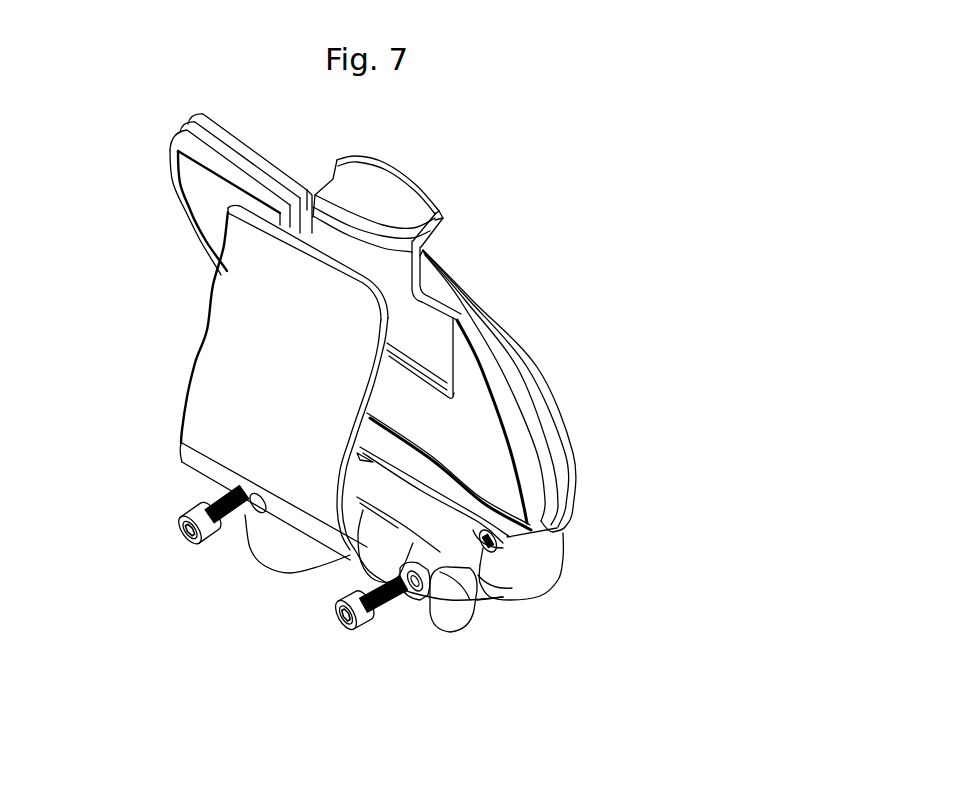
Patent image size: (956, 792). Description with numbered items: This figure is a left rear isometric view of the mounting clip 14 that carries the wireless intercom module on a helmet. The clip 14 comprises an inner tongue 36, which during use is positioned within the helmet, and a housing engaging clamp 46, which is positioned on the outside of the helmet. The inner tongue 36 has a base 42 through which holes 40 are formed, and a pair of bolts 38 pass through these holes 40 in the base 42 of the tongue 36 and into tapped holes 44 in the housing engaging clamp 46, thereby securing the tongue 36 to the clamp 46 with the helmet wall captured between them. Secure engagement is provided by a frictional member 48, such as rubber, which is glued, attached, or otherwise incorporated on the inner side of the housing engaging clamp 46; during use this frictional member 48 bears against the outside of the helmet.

The mounting clip 14 is at (722, 520).
The inner tongue 36 is at (205, 377).
The bolts 38 is at (196, 534).
The holes 40 is at (458, 608).
The base 42 is at (464, 625).
The tapped holes 44 is at (513, 582).
The housing engaging clamp 46 is at (540, 380).
The frictional member 48 is at (487, 426).